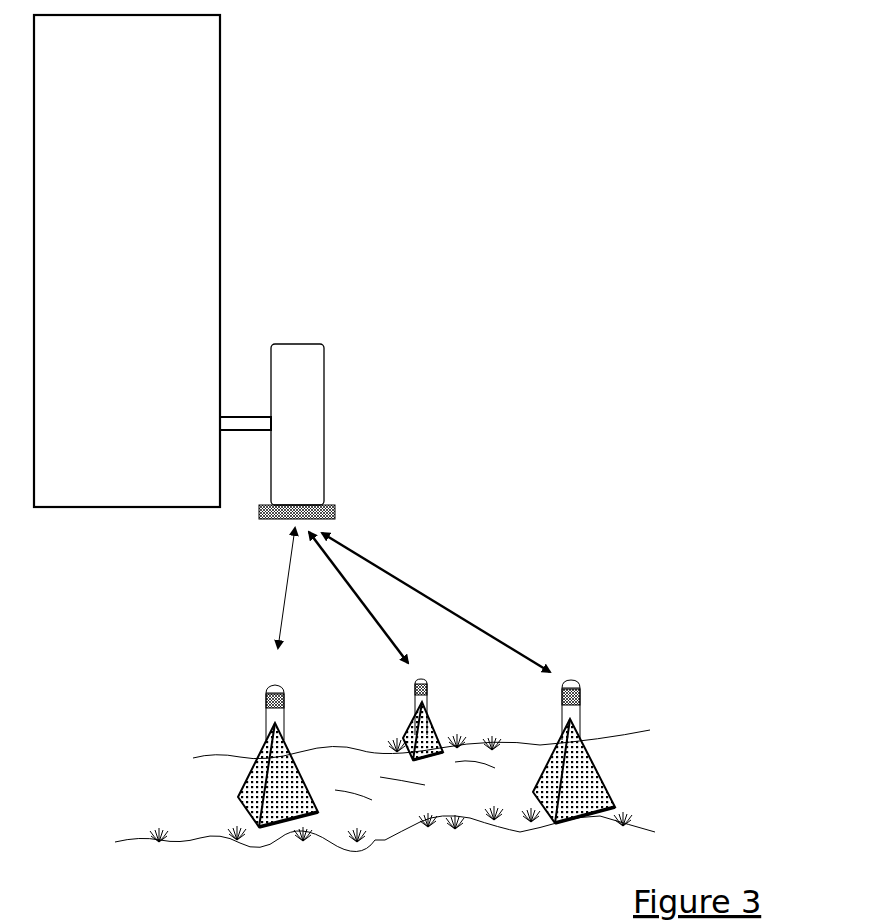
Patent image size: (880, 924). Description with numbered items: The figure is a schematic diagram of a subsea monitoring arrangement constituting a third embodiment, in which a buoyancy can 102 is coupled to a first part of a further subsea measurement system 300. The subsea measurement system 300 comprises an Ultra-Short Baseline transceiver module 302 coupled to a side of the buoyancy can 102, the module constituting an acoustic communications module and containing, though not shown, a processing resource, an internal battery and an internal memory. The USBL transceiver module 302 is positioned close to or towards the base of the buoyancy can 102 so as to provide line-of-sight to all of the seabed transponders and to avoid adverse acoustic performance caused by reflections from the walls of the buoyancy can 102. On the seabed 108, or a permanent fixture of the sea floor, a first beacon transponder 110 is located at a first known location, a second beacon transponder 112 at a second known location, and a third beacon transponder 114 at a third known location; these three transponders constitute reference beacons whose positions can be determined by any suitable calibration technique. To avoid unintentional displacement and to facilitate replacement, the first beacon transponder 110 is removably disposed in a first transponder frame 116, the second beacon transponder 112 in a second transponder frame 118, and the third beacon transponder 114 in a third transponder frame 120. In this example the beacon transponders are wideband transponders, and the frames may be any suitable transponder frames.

The buoyancy can 102 is at (127, 261).
The USBL transceiver module 302 is at (277, 431).
The subsea measurement system 300 is at (580, 440).
The seabed 108 is at (145, 842).
The first beacon transponder 110 is at (275, 713).
The second beacon transponder 112 is at (423, 700).
The third beacon transponder 114 is at (570, 708).
The first transponder frame 116 is at (258, 788).
The second transponder frame 118 is at (407, 733).
The third transponder frame 120 is at (587, 790).